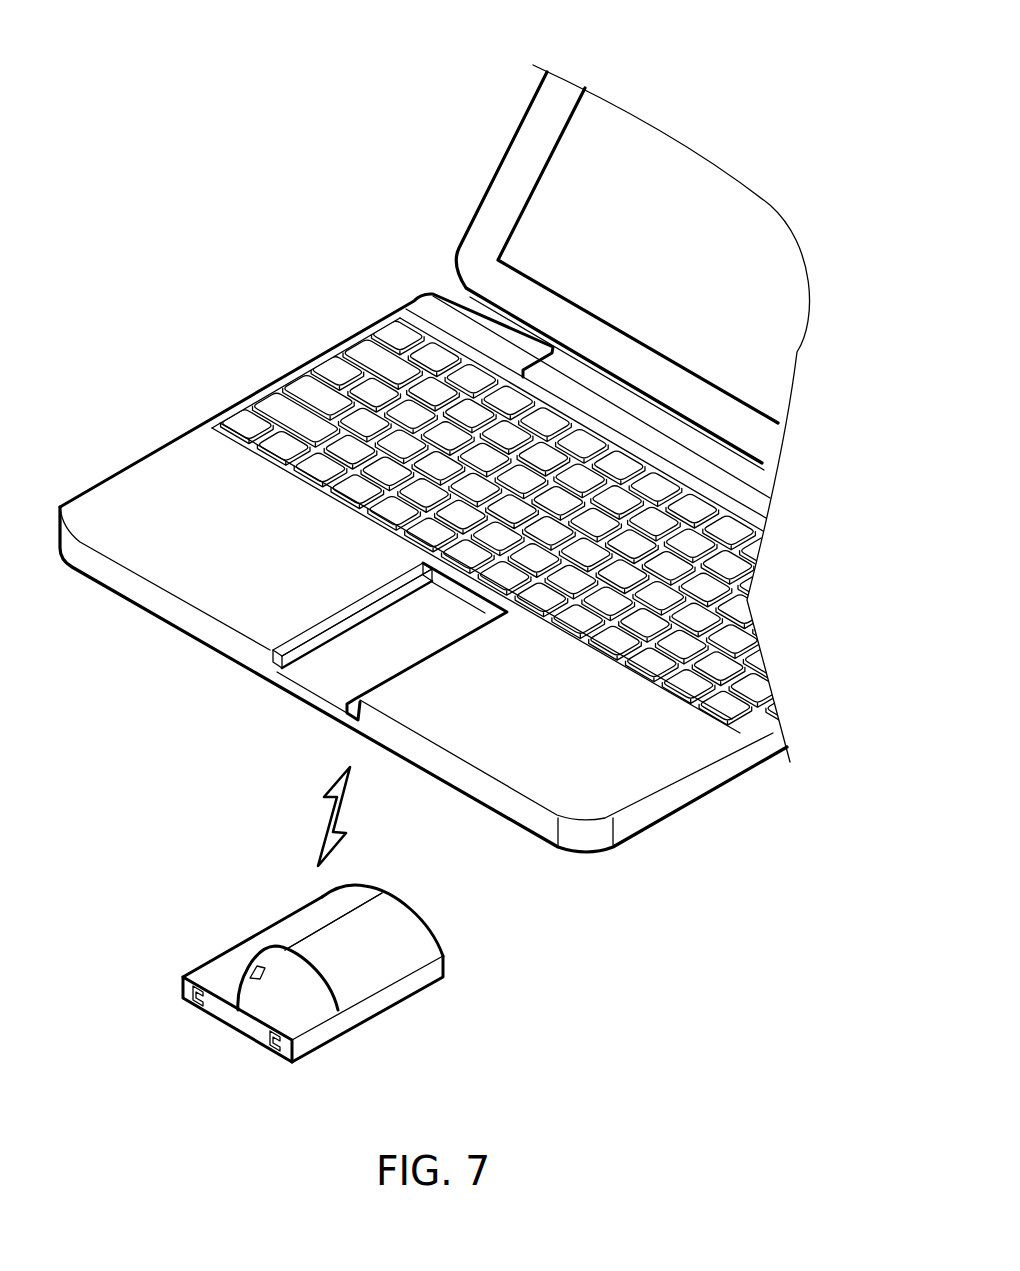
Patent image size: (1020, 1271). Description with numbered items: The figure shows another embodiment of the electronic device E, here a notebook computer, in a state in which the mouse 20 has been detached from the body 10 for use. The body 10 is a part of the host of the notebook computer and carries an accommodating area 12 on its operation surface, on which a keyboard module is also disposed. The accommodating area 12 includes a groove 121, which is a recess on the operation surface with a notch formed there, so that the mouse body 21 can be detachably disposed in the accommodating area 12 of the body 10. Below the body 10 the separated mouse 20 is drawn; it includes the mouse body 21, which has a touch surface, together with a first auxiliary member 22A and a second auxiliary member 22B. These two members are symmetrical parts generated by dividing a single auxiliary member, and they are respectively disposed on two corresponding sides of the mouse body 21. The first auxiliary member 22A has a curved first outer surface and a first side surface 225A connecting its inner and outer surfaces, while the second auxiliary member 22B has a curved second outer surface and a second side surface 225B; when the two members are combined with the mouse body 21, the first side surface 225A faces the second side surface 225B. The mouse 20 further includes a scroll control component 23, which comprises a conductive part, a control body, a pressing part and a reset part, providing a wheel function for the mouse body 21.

The electronic device E is at (481, 197).
The body 10 is at (210, 467).
The accommodating area 12 is at (307, 628).
The groove 121 is at (410, 654).
The mouse 20 is at (343, 977).
The mouse body 21 is at (213, 1004).
The first auxiliary member 22A is at (302, 997).
The second auxiliary member 22B is at (272, 942).
The first side surface 225A is at (352, 902).
The second side surface 225B is at (417, 908).
The scroll control component 23 is at (250, 970).